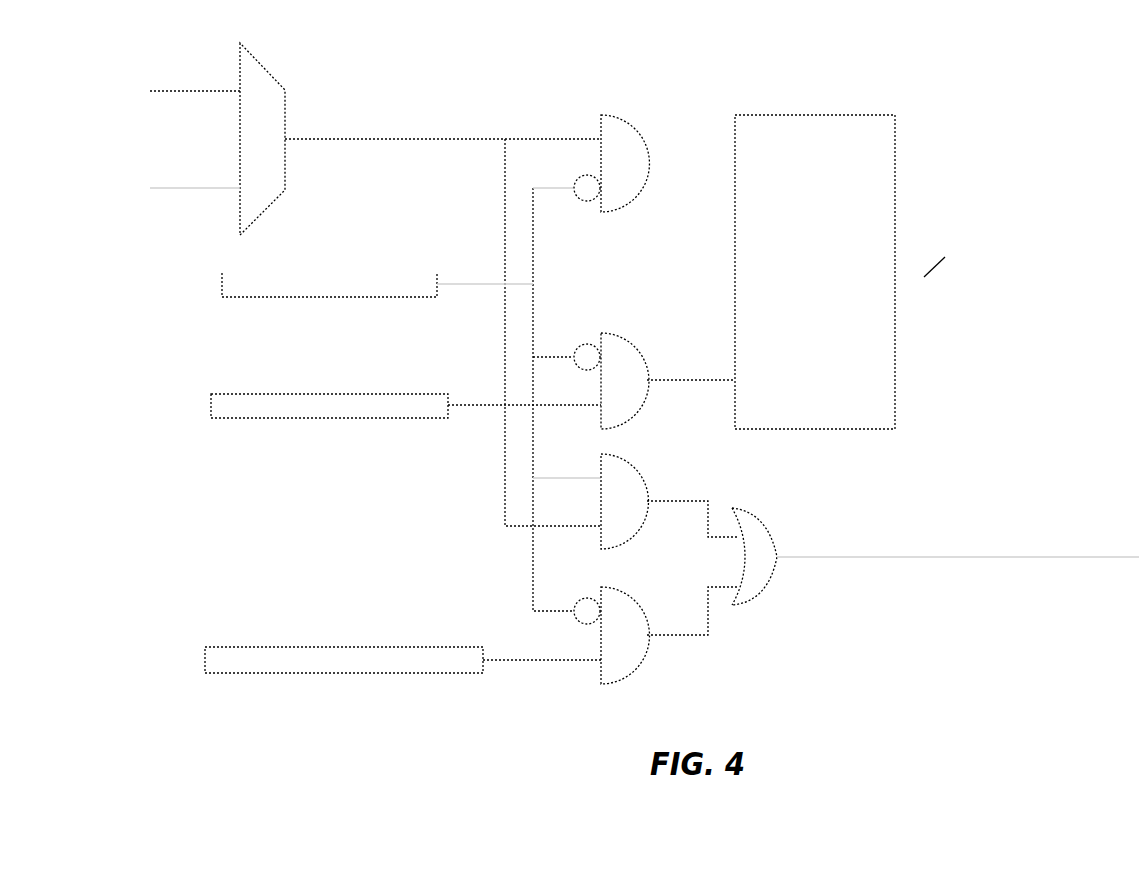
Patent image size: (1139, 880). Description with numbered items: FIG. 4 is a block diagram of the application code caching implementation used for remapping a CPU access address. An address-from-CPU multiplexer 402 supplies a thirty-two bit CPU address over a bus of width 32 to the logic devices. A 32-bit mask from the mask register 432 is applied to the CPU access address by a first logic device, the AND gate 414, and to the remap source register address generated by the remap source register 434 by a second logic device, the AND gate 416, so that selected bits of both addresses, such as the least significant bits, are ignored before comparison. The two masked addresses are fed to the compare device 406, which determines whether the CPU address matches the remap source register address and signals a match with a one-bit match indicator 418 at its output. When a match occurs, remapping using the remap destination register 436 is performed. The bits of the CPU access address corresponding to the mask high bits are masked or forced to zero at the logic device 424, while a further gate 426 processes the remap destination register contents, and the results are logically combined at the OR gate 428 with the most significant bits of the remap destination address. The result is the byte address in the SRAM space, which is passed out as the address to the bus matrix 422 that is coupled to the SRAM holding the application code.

The multiplexer 402 is at (266, 74).
The 32-bit address 32 is at (473, 150).
The AND gate 414 is at (625, 122).
The AND gate 416 is at (618, 340).
The logic device 424 is at (622, 463).
The AND gate 426 is at (630, 593).
The OR gate 428 is at (760, 508).
The compare device 406 is at (815, 272).
The match indicator 418 is at (983, 259).
The mask register 432 is at (377, 285).
The remap source register 434 is at (406, 406).
The remap destination register 436 is at (403, 660).
The bus matrix 422 is at (958, 547).